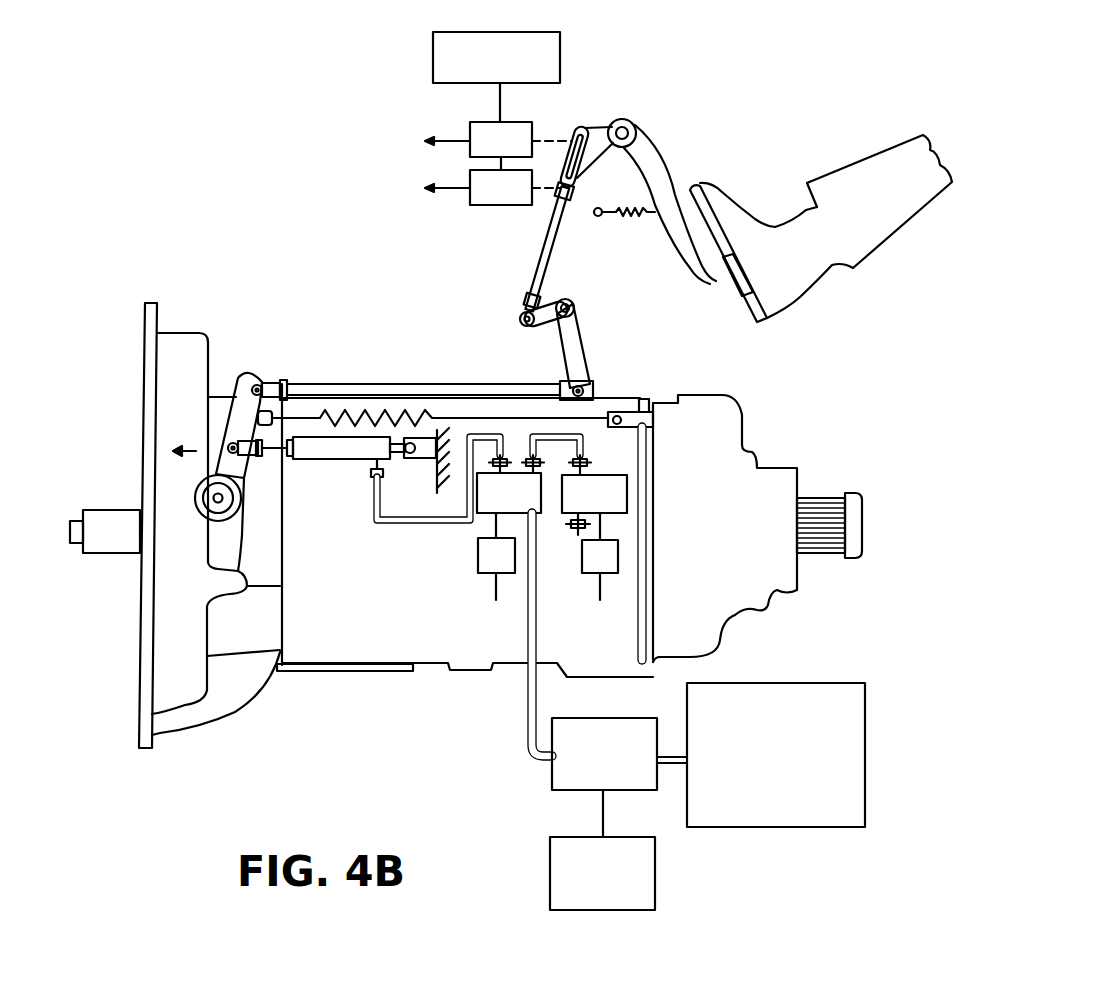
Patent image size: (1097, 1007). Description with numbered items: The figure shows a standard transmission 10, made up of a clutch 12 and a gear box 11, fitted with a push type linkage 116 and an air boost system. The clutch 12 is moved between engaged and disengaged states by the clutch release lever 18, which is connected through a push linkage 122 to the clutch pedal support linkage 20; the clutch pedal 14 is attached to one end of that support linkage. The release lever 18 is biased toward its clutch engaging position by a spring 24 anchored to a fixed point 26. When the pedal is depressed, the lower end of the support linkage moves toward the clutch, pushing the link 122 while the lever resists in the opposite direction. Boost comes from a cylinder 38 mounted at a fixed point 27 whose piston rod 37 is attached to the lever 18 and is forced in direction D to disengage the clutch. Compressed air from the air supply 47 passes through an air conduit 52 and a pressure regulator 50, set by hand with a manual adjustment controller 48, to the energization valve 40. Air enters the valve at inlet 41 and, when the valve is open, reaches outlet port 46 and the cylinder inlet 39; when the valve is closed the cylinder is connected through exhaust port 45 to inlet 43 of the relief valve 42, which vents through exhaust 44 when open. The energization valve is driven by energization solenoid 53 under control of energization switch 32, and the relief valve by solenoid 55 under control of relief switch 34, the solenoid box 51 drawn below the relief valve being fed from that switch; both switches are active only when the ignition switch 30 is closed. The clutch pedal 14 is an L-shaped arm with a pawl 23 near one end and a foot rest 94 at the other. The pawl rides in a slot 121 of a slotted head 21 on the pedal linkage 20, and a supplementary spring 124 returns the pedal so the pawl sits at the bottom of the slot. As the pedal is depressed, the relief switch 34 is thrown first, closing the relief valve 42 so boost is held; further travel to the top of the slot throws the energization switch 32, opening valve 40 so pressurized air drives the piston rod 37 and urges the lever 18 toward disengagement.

The standard transmission 10 is at (401, 742).
The gear box 11 is at (353, 630).
The clutch 12 is at (180, 355).
The clutch pedal 14 is at (708, 152).
The clutch release lever 18 is at (248, 482).
The clutch pedal support linkage 20 is at (604, 195).
The slotted head 21 is at (599, 217).
The pawl 23 is at (588, 181).
The spring 24 is at (341, 414).
The fixed point 26 is at (647, 410).
The fixed point 27 is at (405, 458).
The ignition switch 30 is at (560, 53).
The energization switch 32 is at (468, 127).
The relief switch 34 is at (502, 205).
The piston rod 37 is at (268, 482).
The cylinder 38 is at (347, 462).
The inlet 39 is at (387, 522).
The energization valve 40 is at (506, 507).
The inlet 41 is at (525, 513).
The relief valve 42 is at (581, 508).
The inlet 43 is at (585, 472).
The exhaust 44 is at (571, 524).
The exhaust port 45 is at (531, 455).
The outlet port 46 is at (496, 455).
The air supply 47 is at (770, 827).
The manual adjustment controller 48 is at (655, 887).
The pressure regulator 50 is at (599, 718).
The solenoid 51 is at (598, 580).
The air conduit 52 is at (482, 797).
The energization solenoid 53 is at (478, 558).
The solenoid 55 is at (583, 580).
The foot rest 94 is at (725, 278).
The push type linkage 116 is at (387, 323).
The slot 121 is at (593, 123).
The push linkage 122 is at (429, 389).
The supplementary spring 124 is at (652, 232).